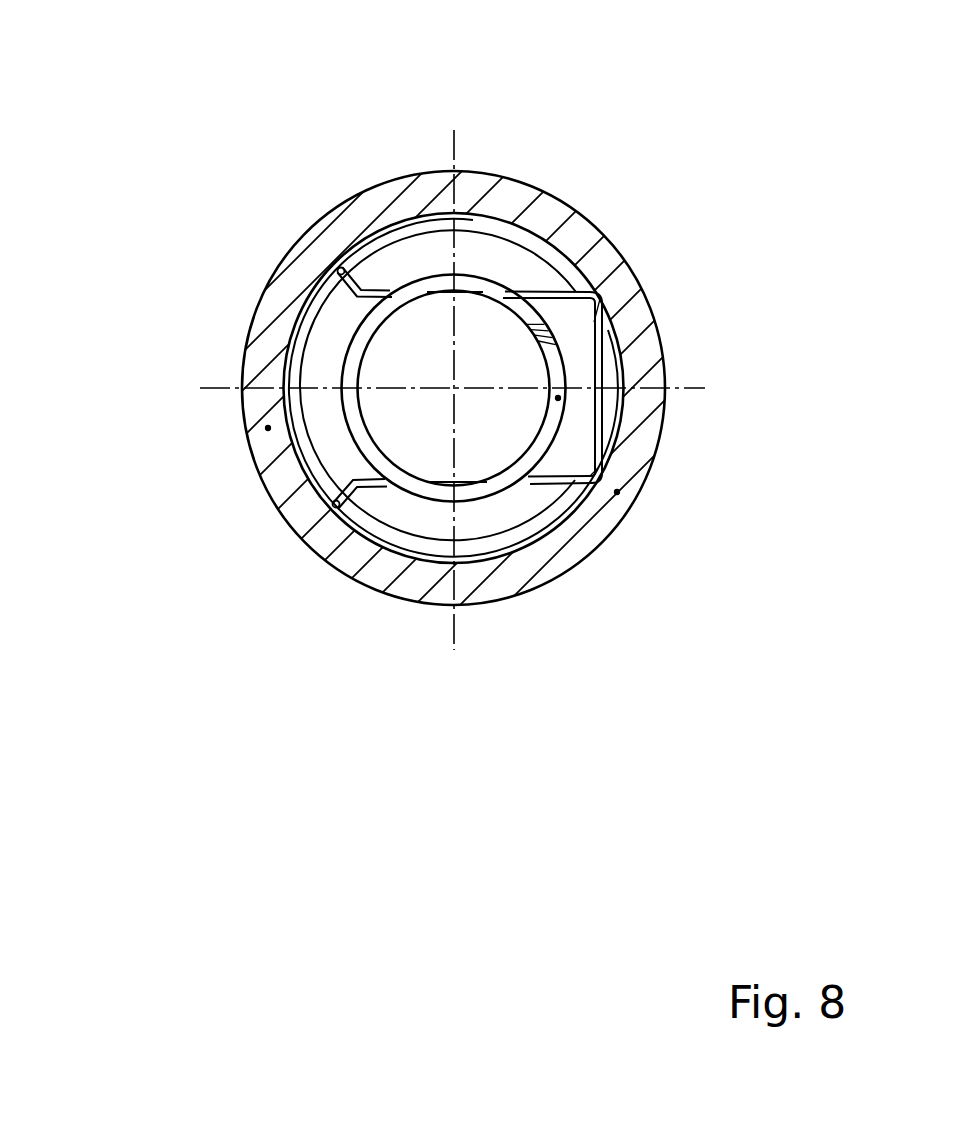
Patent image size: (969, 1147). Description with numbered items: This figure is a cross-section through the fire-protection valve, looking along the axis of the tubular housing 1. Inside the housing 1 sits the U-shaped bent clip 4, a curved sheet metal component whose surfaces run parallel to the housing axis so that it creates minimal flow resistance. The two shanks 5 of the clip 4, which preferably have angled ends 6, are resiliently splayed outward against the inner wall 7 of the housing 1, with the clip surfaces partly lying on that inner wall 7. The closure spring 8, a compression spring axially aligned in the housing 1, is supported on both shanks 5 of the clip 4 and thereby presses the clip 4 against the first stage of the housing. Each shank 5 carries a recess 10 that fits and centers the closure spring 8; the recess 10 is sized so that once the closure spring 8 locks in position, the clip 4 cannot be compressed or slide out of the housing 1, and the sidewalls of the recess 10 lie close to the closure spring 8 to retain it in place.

The tubular housing 1 is at (268, 428).
The U-shaped bent clip 4 is at (617, 492).
The shanks 5 is at (600, 294).
The angled ends 6 is at (340, 270).
The inner wall 7 is at (508, 225).
The closure spring 8 is at (558, 398).
The recess 10 is at (522, 287).